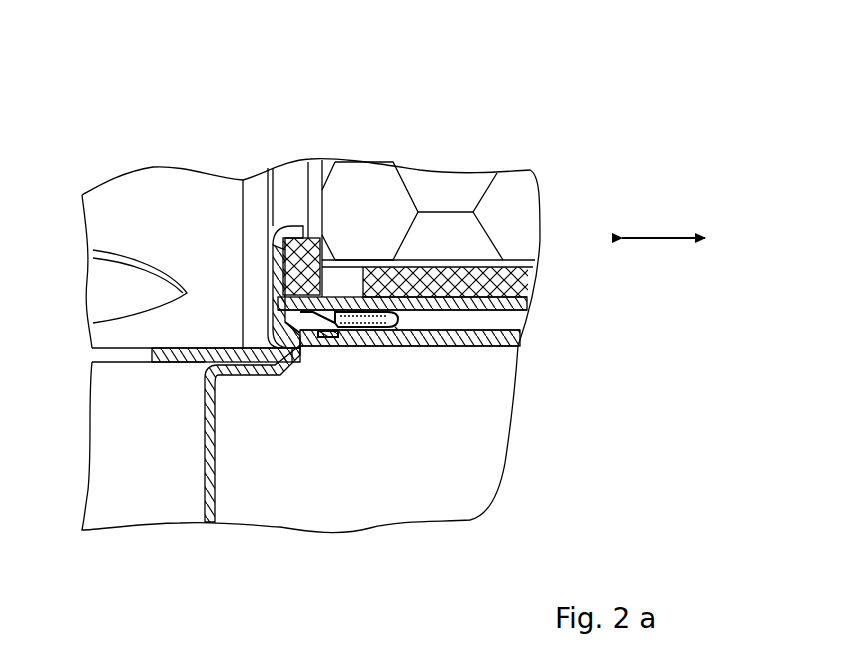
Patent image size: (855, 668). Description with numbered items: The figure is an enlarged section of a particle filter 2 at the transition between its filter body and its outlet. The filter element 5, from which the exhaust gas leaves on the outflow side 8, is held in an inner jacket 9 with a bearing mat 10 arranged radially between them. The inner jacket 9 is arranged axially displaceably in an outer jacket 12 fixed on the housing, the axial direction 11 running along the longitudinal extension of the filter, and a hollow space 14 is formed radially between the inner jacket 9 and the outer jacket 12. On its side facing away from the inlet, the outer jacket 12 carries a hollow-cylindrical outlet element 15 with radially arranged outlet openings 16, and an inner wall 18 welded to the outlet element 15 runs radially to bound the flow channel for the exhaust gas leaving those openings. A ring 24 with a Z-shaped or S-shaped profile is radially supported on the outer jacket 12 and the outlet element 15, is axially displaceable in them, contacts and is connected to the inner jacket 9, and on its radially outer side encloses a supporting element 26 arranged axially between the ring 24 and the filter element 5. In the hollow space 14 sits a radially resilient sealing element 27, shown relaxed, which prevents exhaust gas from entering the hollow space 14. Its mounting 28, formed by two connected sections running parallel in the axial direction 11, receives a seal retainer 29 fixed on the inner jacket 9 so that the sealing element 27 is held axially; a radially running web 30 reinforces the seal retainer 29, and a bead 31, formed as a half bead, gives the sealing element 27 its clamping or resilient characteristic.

The particle filter 2 is at (566, 160).
The filter element 5 is at (458, 247).
The outflow side 8 is at (261, 496).
The inner jacket 9 is at (440, 332).
The bearing mat 10 is at (516, 281).
The axial direction 11 is at (663, 236).
The outer jacket 12 is at (482, 352).
The hollow space 14 is at (500, 318).
The outlet element 15 is at (157, 370).
The outlet openings 16 is at (145, 300).
The inner wall 18 is at (208, 522).
The ring 24 is at (288, 218).
The supporting element 26 is at (298, 262).
The sealing element 27 is at (392, 336).
The mounting 28 is at (370, 330).
The seal retainer 29 is at (316, 325).
The web 30 is at (326, 305).
The bead 31 is at (321, 334).